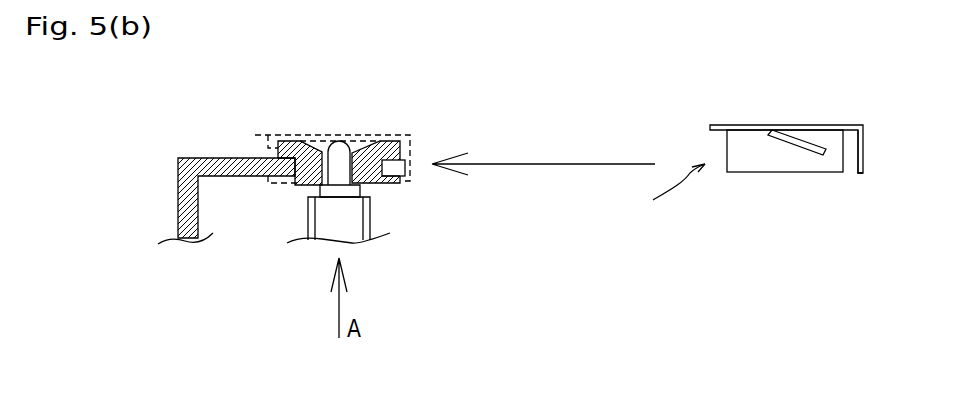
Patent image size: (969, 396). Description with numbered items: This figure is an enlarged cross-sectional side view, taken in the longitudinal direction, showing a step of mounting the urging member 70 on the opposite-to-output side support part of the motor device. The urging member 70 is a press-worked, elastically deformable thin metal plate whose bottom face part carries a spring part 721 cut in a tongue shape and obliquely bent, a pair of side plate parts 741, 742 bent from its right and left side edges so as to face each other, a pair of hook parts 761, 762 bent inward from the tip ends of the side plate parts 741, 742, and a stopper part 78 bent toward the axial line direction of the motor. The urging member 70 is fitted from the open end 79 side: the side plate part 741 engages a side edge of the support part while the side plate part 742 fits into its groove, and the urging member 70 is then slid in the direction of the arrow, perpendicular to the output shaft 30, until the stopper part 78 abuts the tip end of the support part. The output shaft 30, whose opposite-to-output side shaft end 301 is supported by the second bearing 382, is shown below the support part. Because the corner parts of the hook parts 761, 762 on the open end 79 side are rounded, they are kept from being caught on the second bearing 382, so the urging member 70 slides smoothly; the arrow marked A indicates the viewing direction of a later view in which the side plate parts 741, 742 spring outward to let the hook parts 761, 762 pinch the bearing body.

The opposite-to-output side shaft end 301 is at (262, 157).
The urging member 70 is at (328, 135).
The spring part 721 is at (350, 141).
The stopper part 78 is at (412, 145).
The second bearing 382 is at (387, 178).
The output shaft 30 is at (360, 221).
The hook part 761 is at (257, 227).
The hook part 762 is at (281, 178).
The side plate part 741 is at (773, 197).
The side plate part 742 is at (768, 173).
The open end 79 is at (666, 196).